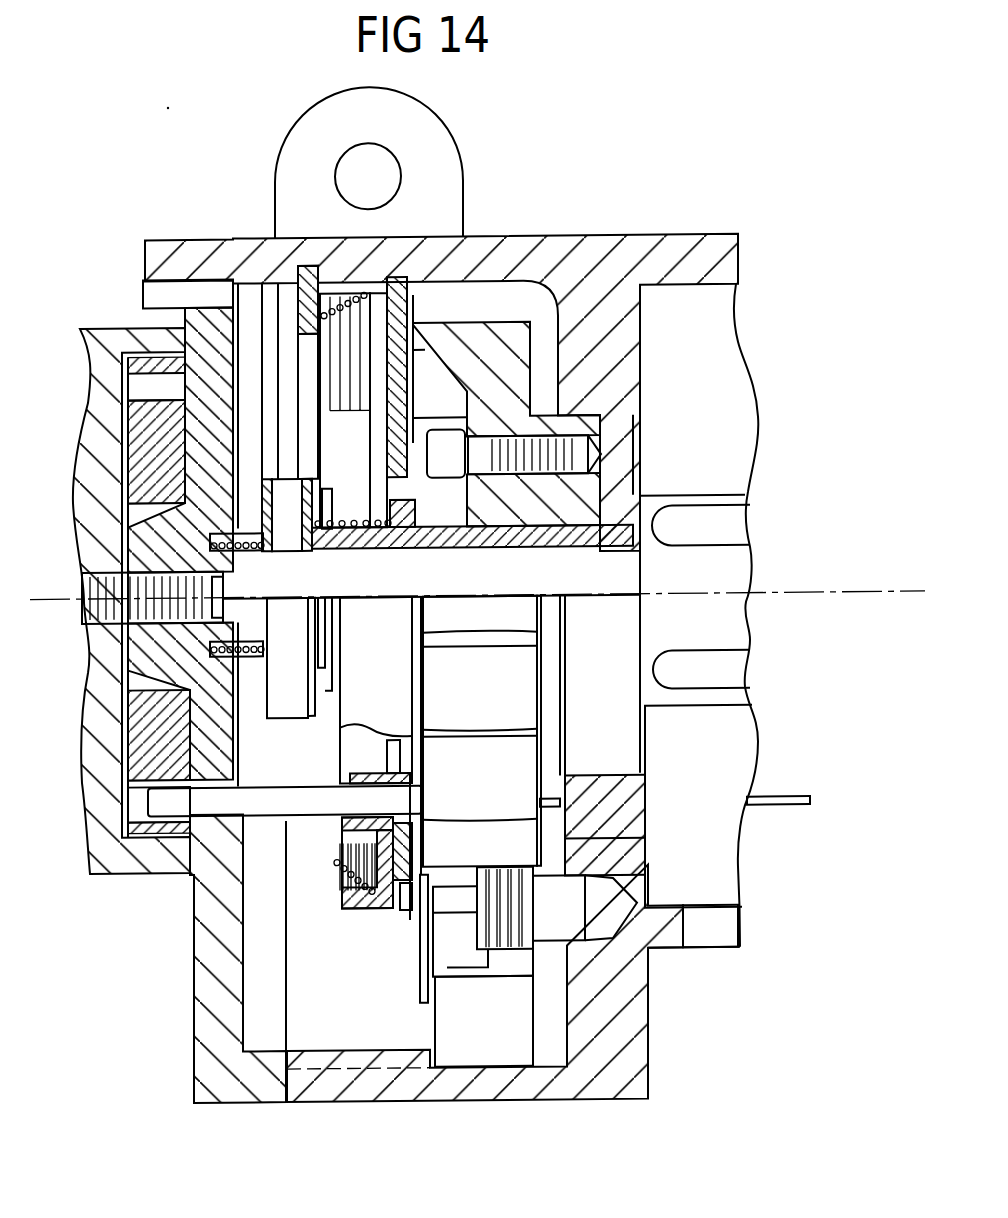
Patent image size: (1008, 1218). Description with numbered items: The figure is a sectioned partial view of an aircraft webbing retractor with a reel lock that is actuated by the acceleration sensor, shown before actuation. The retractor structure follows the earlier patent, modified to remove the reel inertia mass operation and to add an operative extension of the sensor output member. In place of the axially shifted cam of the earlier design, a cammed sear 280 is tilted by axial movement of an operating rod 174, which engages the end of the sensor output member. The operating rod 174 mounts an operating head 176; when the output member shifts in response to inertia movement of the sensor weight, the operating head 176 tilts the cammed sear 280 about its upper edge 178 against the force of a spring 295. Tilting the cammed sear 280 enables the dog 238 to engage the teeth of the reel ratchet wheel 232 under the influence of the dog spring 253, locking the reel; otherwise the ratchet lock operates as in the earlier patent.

The upper edge 178 is at (335, 290).
The reel ratchet wheel 232 is at (473, 687).
The operating rod 174 is at (543, 802).
The operating head 176 is at (410, 835).
The spring 295 is at (333, 867).
The cammed sear 280 is at (373, 910).
The dog 238 is at (453, 1032).
The dog spring 253 is at (517, 950).